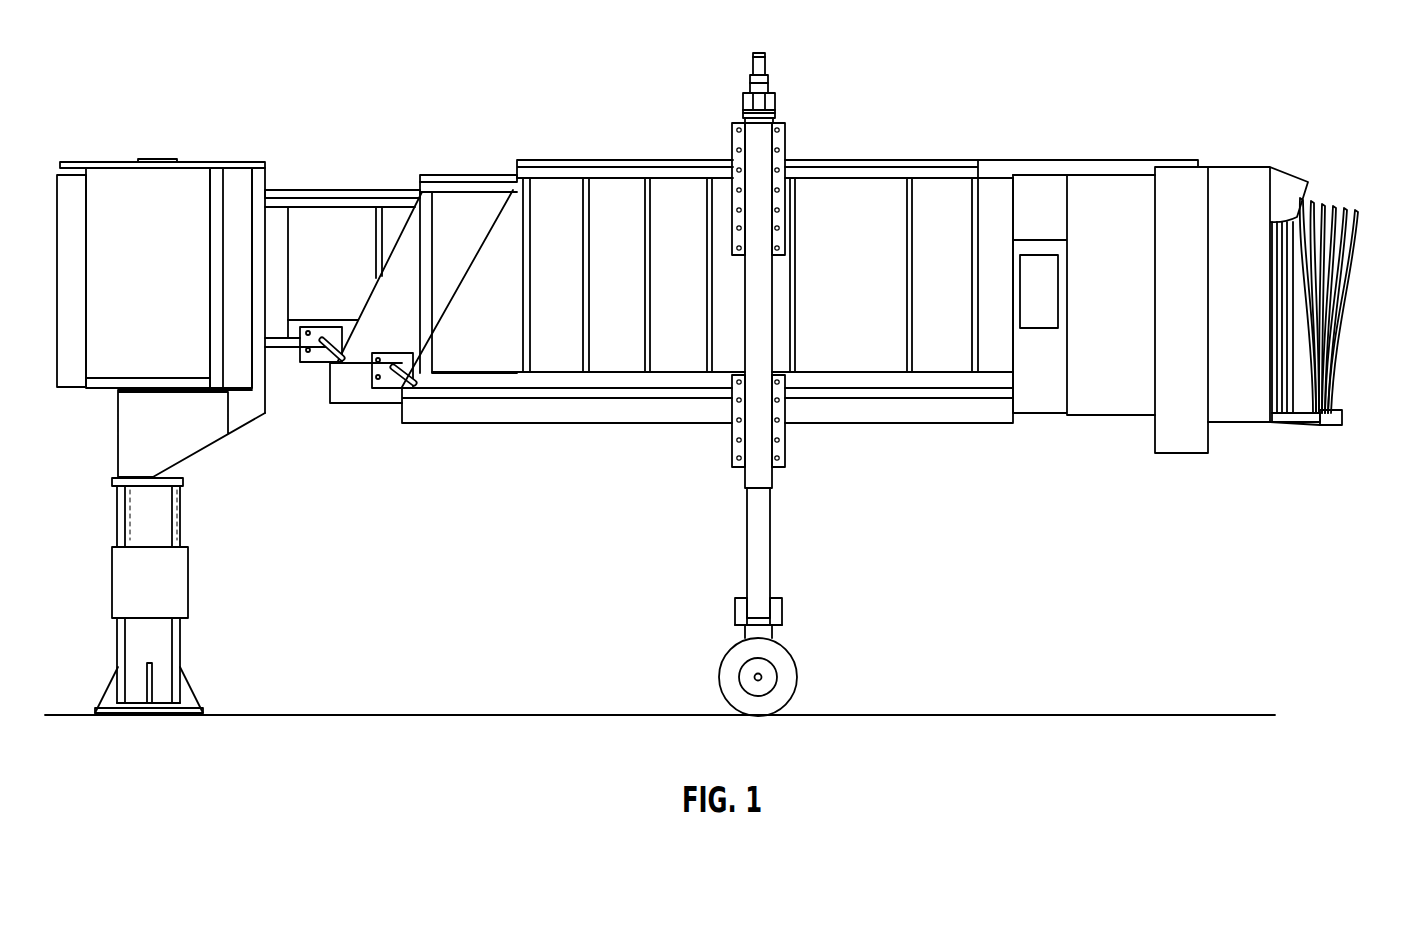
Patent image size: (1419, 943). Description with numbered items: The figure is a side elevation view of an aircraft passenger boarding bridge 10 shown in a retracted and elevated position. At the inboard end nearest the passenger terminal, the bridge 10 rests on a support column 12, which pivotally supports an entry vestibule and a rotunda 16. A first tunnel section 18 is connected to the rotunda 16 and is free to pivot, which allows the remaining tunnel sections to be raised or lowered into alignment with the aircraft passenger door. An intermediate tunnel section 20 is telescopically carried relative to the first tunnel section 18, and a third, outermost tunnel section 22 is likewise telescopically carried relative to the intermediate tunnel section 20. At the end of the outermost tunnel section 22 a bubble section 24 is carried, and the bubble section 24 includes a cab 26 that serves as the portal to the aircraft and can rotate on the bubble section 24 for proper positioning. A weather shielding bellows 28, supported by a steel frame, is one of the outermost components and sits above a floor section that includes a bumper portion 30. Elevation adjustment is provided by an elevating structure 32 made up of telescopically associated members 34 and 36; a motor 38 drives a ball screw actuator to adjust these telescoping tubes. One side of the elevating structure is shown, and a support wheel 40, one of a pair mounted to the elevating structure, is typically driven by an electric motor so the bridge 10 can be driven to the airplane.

The passenger boarding bridge 10 is at (925, 97).
The support column 12 is at (190, 582).
The rotunda 16 is at (192, 160).
The first tunnel section 18 is at (343, 188).
The intermediate tunnel section 20 is at (475, 175).
The outermost tunnel section 22 is at (592, 158).
The bubble section 24 is at (1043, 157).
The cab 26 is at (1238, 167).
The weather shielding bellows 28 is at (1320, 198).
The bumper portion 30 is at (1343, 417).
The elevating structure 32 is at (743, 475).
The telescopically associated member 34 is at (770, 542).
The telescopically associated member 36 is at (773, 473).
The motor 38 is at (752, 65).
The support wheel 40 is at (790, 653).